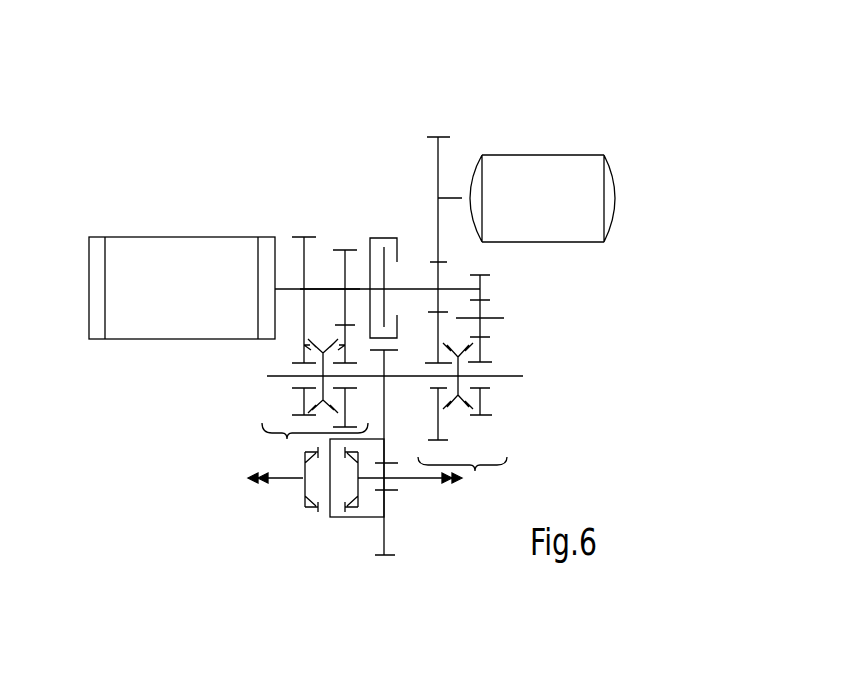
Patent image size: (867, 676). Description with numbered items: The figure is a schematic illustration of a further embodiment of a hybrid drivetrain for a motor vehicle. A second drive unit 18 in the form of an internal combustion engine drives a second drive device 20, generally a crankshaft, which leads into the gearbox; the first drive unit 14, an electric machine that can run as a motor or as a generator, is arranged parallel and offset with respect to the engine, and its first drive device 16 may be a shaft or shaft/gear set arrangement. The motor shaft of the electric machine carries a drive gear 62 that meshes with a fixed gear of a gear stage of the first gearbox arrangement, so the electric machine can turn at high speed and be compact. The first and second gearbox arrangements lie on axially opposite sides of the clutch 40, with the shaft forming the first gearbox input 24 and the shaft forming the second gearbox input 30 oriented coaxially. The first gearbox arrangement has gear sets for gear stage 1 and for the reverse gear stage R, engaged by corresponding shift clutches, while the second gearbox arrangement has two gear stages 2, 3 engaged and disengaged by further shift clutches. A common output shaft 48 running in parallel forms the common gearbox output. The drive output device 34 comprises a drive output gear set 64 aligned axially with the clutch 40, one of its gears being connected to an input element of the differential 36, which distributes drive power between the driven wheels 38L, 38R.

The first drive unit 14 is at (580, 243).
The first drive device 16 is at (416, 175).
The second drive unit 18 is at (170, 237).
The second drive device 20 is at (290, 288).
The first gearbox input 24 is at (456, 289).
The second gearbox input 30 is at (320, 288).
The drive output device 34 is at (229, 493).
The differential 36 is at (315, 522).
The driven wheel 38L is at (289, 480).
The driven wheel 38R is at (413, 482).
The clutch 40 is at (384, 234).
The common output shaft 48 is at (503, 375).
The drive gear 62 is at (440, 155).
The drive output gear set 64 is at (384, 562).
The gear stage 1 is at (438, 424).
The gear stage 2 is at (345, 295).
The gear stage 3 is at (304, 289).
The reverse gear stage R is at (481, 413).